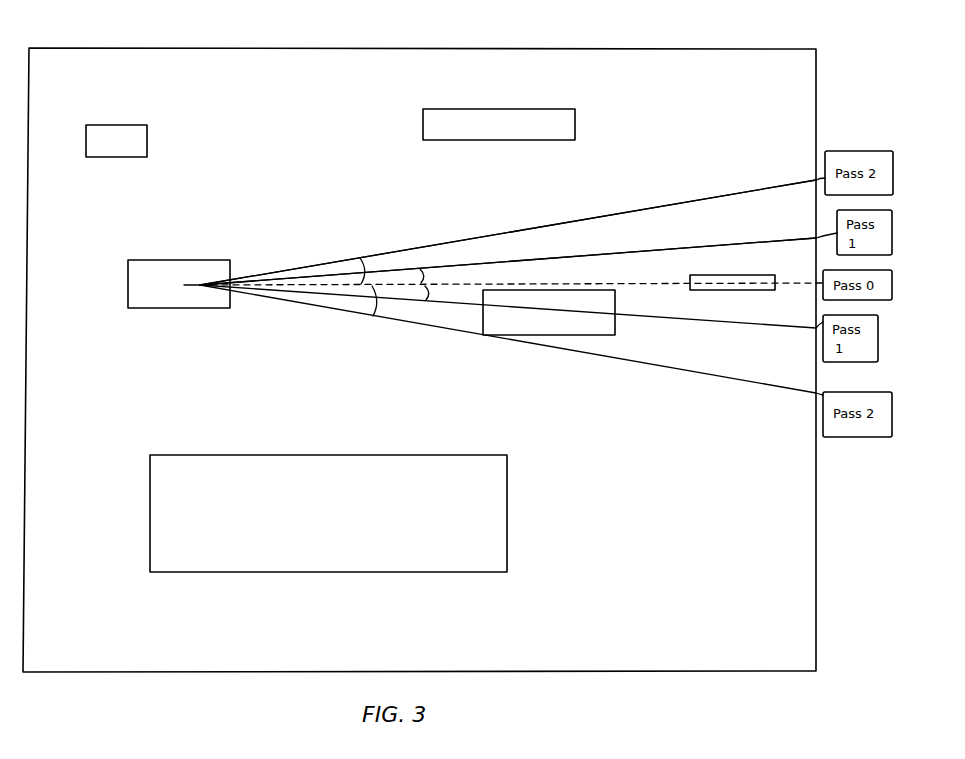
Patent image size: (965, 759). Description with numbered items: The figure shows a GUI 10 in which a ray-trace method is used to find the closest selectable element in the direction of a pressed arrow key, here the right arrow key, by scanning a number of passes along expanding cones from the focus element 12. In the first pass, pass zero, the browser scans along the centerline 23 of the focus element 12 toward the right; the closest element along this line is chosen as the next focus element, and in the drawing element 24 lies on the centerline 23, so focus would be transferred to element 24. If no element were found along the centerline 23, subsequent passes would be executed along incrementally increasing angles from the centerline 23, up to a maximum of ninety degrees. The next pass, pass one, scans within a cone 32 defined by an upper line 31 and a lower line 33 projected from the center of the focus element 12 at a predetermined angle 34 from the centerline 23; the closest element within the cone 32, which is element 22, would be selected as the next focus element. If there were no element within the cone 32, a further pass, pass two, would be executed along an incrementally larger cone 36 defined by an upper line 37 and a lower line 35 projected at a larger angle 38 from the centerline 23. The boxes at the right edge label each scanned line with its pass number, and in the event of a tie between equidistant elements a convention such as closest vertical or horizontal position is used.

The GUI 10 is at (268, 47).
The focus element 12 is at (208, 260).
The element 22 is at (617, 338).
The centerline 23 is at (633, 283).
The element 24 is at (743, 291).
The upper line 31 is at (705, 243).
The cone 32 is at (597, 262).
The lower line 33 is at (671, 323).
The predetermined angle 34 is at (426, 278).
The lower line 35 is at (722, 372).
The cone 36 is at (568, 227).
The upper line 37 is at (750, 185).
The larger angle 38 is at (366, 268).